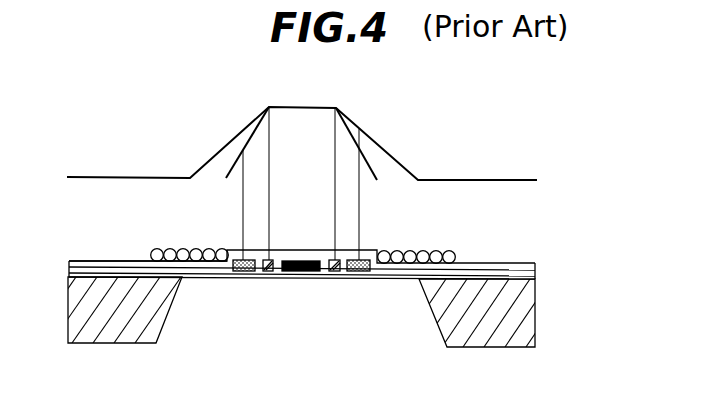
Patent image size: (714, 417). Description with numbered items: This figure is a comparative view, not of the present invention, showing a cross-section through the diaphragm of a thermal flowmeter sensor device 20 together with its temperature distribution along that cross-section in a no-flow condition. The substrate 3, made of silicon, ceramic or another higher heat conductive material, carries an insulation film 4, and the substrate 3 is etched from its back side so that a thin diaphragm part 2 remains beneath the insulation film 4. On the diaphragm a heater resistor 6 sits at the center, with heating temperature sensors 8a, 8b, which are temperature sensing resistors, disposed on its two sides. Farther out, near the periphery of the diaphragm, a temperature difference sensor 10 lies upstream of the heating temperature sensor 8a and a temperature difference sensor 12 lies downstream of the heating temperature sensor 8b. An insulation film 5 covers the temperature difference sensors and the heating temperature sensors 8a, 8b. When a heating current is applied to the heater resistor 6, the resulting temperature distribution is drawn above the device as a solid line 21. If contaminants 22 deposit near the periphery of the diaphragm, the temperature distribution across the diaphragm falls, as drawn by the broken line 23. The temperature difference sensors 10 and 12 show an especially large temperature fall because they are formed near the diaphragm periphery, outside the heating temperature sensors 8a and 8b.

The diaphragm part 2 is at (400, 343).
The substrate 3 is at (532, 318).
The insulation film 4 is at (537, 279).
The insulation film 5 is at (535, 268).
The heater resistor 6 is at (300, 272).
The heating temperature sensor 8a is at (263, 272).
The heating temperature sensor 8b is at (335, 272).
The temperature difference sensor 10 is at (242, 272).
The temperature difference sensor 12 is at (362, 272).
The wiring board 20 is at (92, 260).
The solid line 21 is at (205, 165).
The contaminants 22 is at (183, 251).
The broken line 23 is at (240, 157).